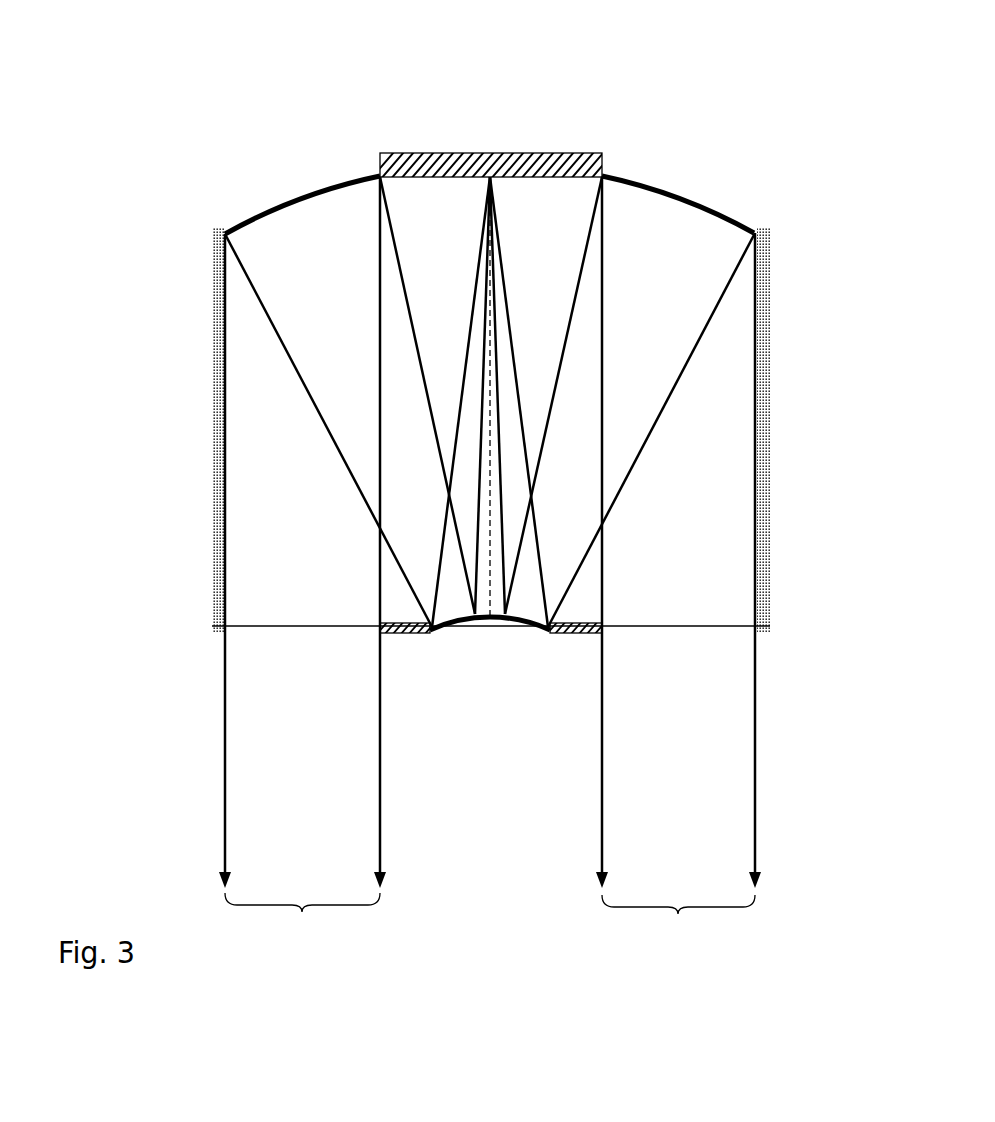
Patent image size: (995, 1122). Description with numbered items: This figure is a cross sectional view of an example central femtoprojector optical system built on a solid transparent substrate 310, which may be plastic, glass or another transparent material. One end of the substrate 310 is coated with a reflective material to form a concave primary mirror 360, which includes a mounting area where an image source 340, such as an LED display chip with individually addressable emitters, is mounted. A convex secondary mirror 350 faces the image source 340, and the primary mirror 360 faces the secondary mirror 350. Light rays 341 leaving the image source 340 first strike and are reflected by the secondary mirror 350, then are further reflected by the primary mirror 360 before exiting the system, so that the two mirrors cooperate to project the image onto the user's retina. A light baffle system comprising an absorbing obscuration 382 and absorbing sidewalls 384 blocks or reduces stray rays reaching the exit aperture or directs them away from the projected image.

The transparent substrate 310 is at (241, 330).
The image source 340 is at (379, 156).
The light rays 341 is at (618, 74).
The secondary mirror 350 is at (457, 624).
The concave primary mirror 360 is at (272, 203).
The absorbing obscuration 382 is at (405, 634).
The sidewalls 384 is at (217, 503).